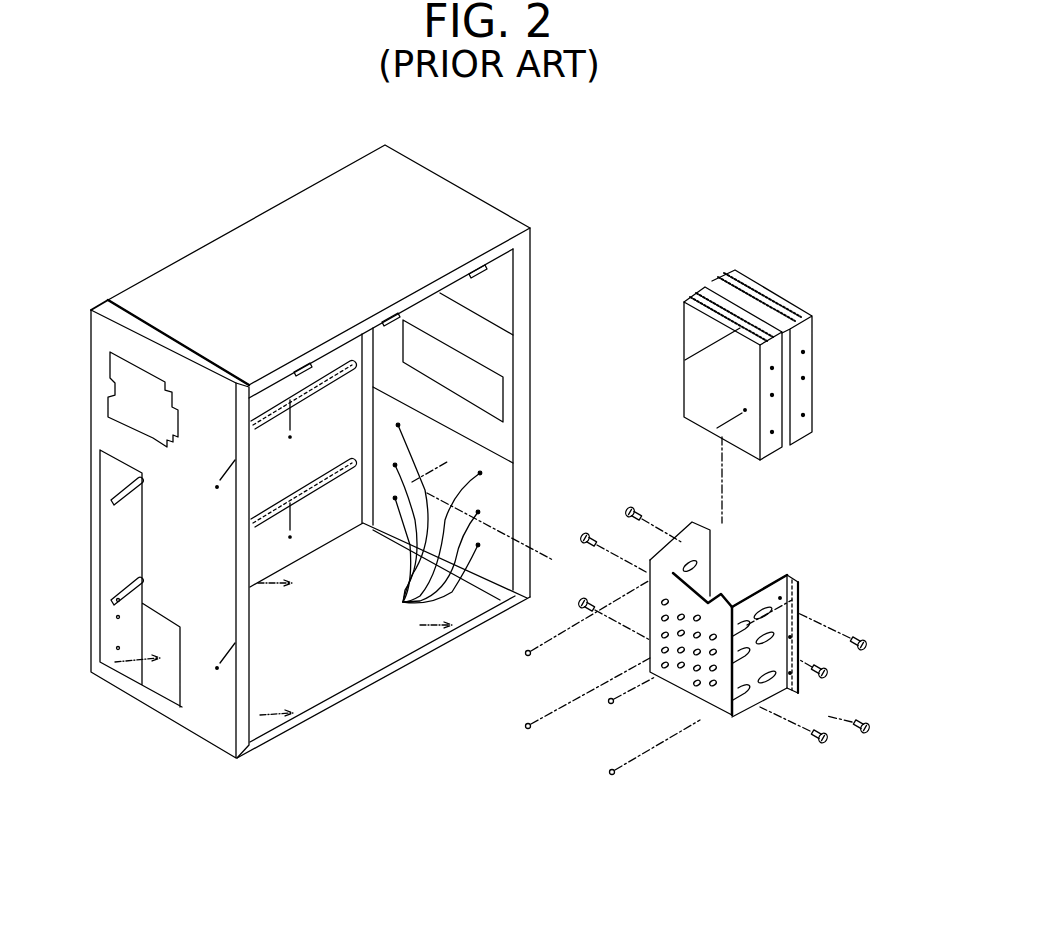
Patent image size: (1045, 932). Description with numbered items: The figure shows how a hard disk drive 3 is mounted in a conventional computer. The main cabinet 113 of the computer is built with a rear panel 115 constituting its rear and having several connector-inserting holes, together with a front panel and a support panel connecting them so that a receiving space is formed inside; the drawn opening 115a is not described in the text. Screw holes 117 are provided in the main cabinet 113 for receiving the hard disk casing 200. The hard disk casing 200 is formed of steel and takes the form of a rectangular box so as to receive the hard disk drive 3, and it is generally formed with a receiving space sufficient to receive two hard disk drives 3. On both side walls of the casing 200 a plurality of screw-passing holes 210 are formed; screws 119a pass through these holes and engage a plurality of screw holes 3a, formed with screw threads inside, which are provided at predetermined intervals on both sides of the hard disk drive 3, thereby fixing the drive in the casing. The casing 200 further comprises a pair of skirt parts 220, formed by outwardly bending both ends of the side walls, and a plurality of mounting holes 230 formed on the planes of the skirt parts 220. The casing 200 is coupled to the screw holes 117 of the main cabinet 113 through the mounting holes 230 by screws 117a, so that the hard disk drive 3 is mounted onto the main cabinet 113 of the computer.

The main cabinet 113 is at (258, 247).
The rear panel 115 is at (203, 710).
The opening of front panel 115a is at (100, 541).
The screw holes 117 is at (423, 524).
The screws 117a is at (609, 702).
The screws 119a is at (626, 509).
The hard disk casing 200 is at (776, 657).
The screw-passing holes 210 is at (699, 573).
The skirt parts 220 is at (788, 575).
The mounting holes 230 is at (800, 685).
The hard disk drive 3 is at (806, 334).
The screw holes 3a is at (805, 415).